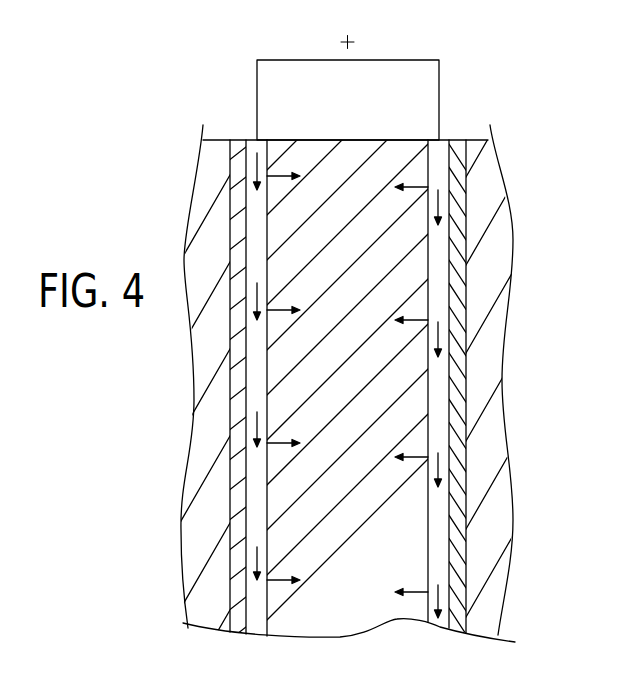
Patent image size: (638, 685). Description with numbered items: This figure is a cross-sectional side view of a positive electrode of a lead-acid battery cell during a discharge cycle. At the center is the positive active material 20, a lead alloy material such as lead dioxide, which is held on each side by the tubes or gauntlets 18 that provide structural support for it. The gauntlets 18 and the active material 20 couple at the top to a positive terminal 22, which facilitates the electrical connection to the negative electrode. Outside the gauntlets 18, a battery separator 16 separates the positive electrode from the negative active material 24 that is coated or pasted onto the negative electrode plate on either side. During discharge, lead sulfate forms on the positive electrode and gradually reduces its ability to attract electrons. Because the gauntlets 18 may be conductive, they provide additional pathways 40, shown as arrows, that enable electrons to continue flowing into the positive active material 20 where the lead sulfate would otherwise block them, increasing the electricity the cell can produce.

The battery separator 16 is at (240, 630).
The tubes or gauntlets 18 is at (257, 622).
The positive active material 20 is at (340, 620).
The positive terminal 22 is at (257, 100).
The negative active material 24 is at (197, 470).
The additional pathways 40 is at (257, 166).